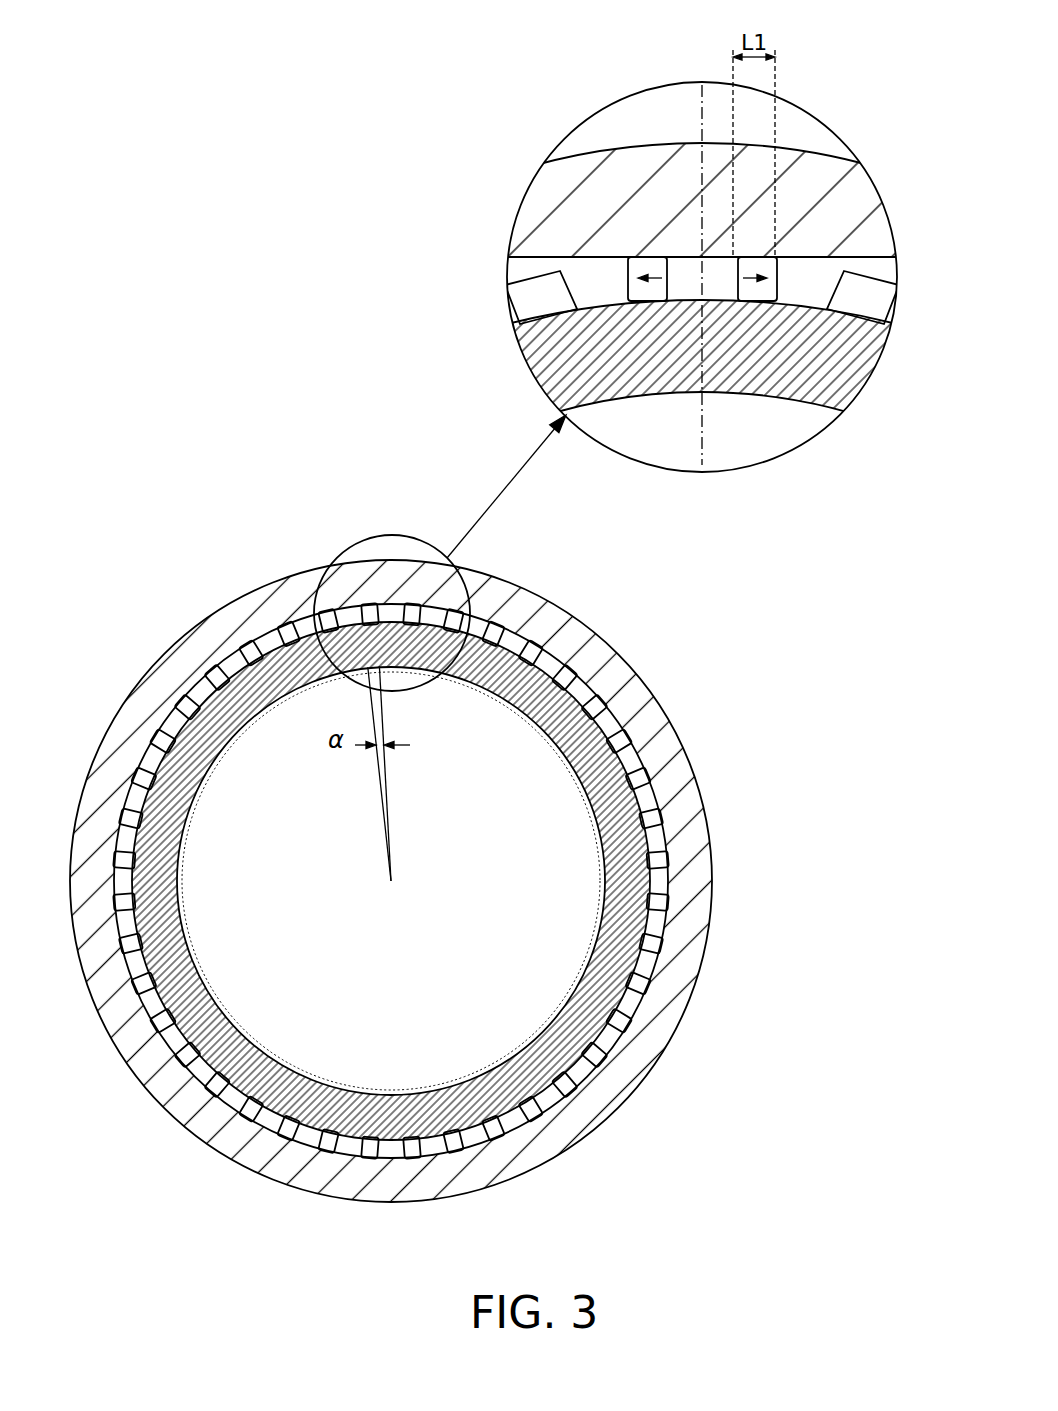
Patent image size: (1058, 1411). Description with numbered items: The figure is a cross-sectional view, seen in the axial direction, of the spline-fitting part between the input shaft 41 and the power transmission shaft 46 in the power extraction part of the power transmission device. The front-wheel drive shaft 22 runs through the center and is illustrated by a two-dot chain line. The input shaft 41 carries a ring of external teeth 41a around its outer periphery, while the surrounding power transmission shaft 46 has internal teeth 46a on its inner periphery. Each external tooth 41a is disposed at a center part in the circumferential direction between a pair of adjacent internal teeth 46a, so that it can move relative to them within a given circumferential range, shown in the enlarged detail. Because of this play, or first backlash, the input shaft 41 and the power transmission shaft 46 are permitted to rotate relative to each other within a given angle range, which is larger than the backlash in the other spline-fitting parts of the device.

The front-wheel drive shaft 22 is at (203, 983).
The input shaft 41 is at (217, 757).
The external tooth 41a is at (180, 712).
The power transmission shaft 46 is at (230, 620).
The internal tooth 46a is at (628, 746).